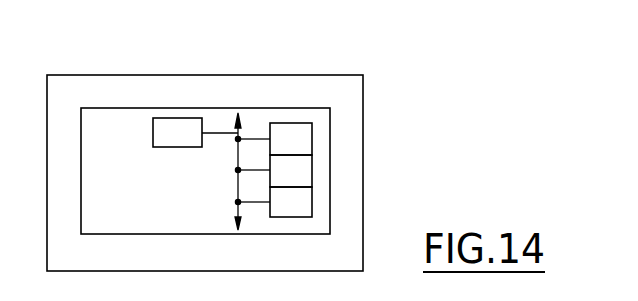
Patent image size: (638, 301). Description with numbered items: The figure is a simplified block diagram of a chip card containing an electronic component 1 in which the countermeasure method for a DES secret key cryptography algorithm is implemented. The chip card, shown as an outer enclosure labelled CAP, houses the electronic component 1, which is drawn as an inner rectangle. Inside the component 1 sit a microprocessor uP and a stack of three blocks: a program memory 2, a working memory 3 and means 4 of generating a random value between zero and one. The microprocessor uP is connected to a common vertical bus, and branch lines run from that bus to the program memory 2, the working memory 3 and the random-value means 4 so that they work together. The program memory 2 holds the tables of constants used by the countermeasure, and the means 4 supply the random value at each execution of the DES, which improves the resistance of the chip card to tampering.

The cap / housing CAP is at (238, 75).
The electronic component 1 is at (325, 112).
The microprocessor uP is at (177, 132).
The program memory 2 is at (306, 141).
The working memory 3 is at (306, 171).
The means of generating a random value 4 is at (303, 208).